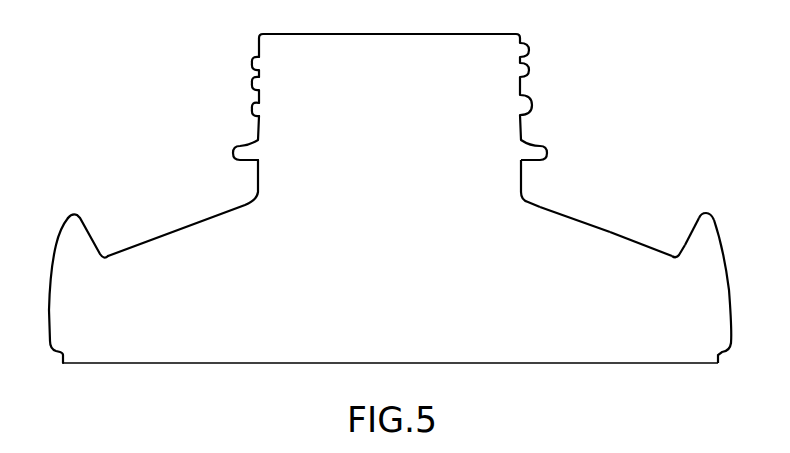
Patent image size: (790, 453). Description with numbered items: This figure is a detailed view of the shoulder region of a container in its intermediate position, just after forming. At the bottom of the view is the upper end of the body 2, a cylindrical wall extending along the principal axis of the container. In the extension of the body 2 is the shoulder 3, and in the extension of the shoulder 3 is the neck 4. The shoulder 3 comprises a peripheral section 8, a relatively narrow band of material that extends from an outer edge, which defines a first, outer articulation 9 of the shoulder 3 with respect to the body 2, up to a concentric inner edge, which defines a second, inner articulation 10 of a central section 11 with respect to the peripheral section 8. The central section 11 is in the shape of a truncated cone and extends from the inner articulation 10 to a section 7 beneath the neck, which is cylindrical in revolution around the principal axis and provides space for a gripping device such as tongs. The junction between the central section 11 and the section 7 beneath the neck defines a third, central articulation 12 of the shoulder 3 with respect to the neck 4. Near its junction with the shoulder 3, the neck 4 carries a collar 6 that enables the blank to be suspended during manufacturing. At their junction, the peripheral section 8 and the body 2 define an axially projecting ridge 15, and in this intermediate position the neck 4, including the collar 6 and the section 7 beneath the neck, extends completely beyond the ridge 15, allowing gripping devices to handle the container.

The body 2 is at (730, 305).
The shoulder 3 is at (603, 210).
The neck 4 is at (522, 35).
The collar 6 is at (533, 147).
The section beneath the neck 7 is at (522, 175).
The peripheral section 8 is at (690, 233).
The first articulation 9 is at (705, 217).
The second articulation 10 is at (678, 260).
The central section 11 is at (608, 230).
The third articulation 12 is at (525, 202).
The ridge 15 is at (73, 206).